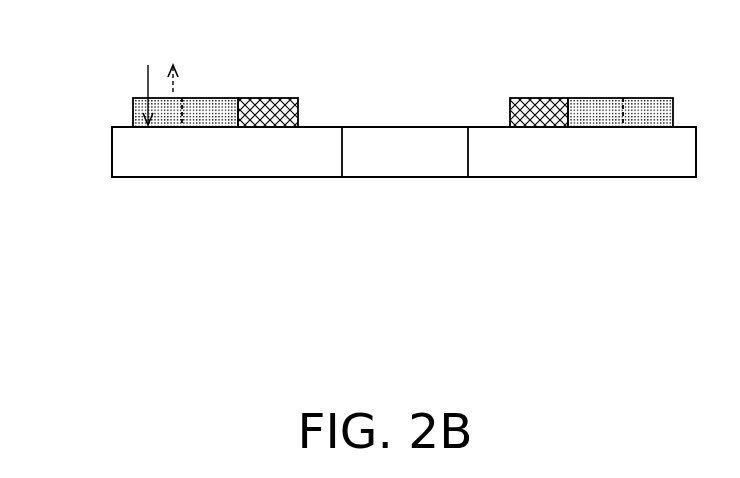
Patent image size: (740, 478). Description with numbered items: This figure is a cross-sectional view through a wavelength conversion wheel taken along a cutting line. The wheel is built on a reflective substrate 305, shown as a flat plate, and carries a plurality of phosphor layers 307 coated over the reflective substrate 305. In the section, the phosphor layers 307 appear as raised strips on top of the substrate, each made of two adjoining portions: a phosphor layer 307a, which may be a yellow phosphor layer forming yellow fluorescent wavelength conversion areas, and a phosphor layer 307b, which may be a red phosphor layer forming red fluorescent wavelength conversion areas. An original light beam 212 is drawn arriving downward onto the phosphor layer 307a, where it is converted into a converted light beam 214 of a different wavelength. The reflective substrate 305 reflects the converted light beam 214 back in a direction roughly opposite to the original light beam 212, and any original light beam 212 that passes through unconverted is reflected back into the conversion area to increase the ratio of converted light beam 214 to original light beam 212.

The reflective substrate 305 is at (138, 153).
The phosphor layers 307 is at (403, 197).
The phosphor layer 307a is at (205, 120).
The phosphor layer 307b is at (265, 120).
The original light beam 212 is at (148, 83).
The converted light beam 214 is at (173, 90).